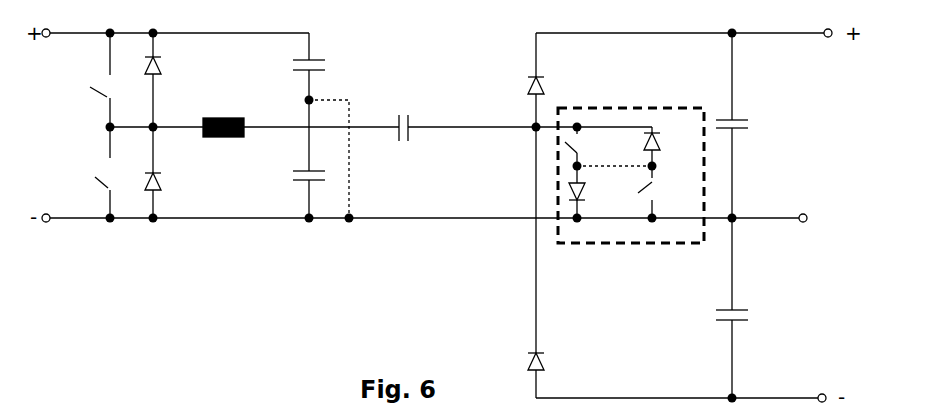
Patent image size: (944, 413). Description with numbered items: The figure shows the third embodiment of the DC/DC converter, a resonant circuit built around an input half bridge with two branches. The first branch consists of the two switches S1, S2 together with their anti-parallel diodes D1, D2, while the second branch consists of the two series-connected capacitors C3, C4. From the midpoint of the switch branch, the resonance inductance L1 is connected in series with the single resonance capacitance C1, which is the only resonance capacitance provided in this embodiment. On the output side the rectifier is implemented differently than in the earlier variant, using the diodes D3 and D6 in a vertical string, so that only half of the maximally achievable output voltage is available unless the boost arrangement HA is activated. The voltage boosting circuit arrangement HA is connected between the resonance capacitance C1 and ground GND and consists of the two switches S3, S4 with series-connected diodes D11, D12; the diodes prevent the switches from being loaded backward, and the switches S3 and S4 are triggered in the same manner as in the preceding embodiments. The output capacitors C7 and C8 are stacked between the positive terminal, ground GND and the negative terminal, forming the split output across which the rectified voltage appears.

The switch S1 is at (91, 80).
The switch S2 is at (90, 172).
The anti-parallel diode D1 is at (171, 80).
The anti-parallel diode D2 is at (171, 172).
The resonance inductance L1 is at (223, 112).
The capacitor C3 is at (324, 66).
The capacitor C4 is at (291, 159).
The resonance capacitance C1 is at (422, 116).
The diode D3 is at (554, 91).
The diode D6 is at (554, 365).
The voltage boosting circuit arrangement HA is at (631, 162).
The switch S3 is at (594, 146).
The switch S4 is at (666, 192).
The series-connected diode D11 is at (600, 192).
The series-connected diode D12 is at (637, 138).
The output capacitor C7 is at (751, 125).
The output capacitor C8 is at (753, 308).
The ground GND is at (841, 219).